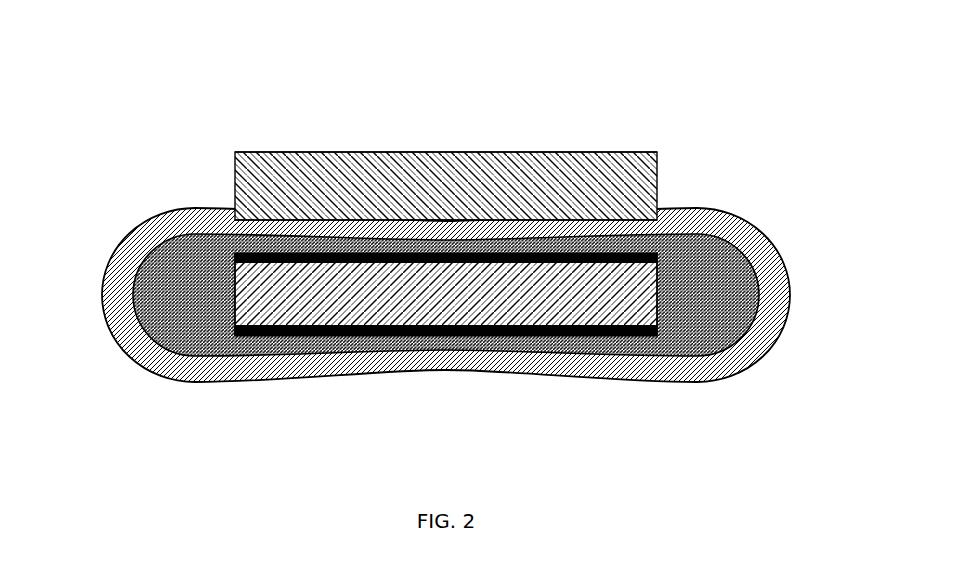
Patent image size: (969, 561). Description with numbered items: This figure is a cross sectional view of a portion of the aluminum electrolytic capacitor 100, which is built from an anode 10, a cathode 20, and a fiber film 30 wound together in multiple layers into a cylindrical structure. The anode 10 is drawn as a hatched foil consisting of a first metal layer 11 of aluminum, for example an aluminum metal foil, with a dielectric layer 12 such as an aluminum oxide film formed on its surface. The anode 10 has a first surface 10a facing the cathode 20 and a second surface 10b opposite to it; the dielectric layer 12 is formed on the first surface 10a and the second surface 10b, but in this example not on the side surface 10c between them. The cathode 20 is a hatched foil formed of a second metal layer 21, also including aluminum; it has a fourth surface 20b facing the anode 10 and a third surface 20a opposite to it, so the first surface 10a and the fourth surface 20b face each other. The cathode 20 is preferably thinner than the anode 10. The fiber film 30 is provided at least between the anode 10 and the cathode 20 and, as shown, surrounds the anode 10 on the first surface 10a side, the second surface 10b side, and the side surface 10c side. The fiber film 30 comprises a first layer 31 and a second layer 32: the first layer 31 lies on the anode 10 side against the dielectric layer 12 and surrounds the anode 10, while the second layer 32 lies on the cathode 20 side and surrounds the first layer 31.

The aluminum electrolytic capacitor 100 is at (462, 250).
The anode 10 is at (402, 279).
The first surface 10a is at (505, 253).
The second surface 10b is at (547, 337).
The side surface 10c is at (234, 332).
The first metal layer 11 is at (108, 282).
The dielectric layer 12 is at (133, 238).
The cathode 20 is at (393, 279).
The third surface 20a is at (428, 152).
The fourth surface 20b is at (373, 222).
The second metal layer 21 is at (234, 183).
The fiber film 30 is at (490, 282).
The first layer 31 is at (772, 300).
The second layer 32 is at (742, 356).